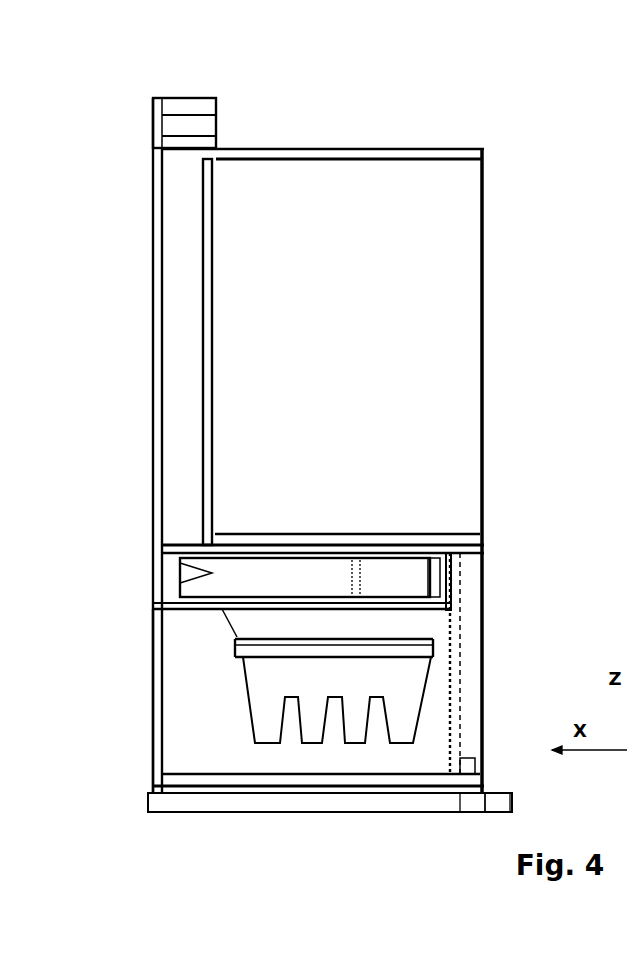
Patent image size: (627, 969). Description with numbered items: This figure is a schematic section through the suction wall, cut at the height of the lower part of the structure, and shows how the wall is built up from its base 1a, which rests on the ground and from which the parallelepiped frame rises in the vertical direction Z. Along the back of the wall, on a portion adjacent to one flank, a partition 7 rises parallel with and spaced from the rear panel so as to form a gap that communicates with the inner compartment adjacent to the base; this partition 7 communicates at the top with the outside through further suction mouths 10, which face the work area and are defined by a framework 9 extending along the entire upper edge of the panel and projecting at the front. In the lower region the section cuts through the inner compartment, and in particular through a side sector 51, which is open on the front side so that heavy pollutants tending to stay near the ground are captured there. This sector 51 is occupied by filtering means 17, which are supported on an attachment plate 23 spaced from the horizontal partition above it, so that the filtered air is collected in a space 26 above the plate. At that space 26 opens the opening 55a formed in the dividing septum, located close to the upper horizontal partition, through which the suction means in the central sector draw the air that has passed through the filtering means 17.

The base 1a is at (355, 812).
The partition 7 is at (212, 207).
The framework 9 is at (183, 110).
The suction mouths 10 is at (216, 130).
The filtering means 17 is at (268, 708).
The attachment plate 23 is at (203, 609).
The space 26 is at (395, 586).
The side sector 51 is at (187, 727).
The opening 55a is at (212, 573).